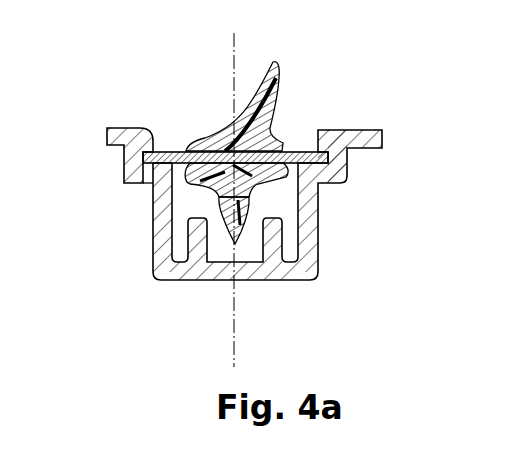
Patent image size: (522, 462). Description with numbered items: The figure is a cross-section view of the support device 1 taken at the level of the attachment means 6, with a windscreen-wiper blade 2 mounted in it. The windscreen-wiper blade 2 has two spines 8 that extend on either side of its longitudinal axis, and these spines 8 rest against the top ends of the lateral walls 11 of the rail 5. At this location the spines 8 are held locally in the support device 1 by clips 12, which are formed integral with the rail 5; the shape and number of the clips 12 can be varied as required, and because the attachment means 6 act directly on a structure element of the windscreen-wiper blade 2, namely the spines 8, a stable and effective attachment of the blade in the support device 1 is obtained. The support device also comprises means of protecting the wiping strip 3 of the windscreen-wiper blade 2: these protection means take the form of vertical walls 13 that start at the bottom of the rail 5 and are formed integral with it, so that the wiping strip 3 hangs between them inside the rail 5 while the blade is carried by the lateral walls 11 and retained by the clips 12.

The support device 1 is at (258, 214).
The windscreen-wiper blade 2 is at (288, 87).
The wiping strip 3 is at (228, 233).
The rail 5 is at (311, 272).
The attachment means 6 is at (365, 164).
The spines 8 is at (297, 146).
The lateral walls 11 is at (153, 227).
The clips 12 is at (152, 146).
The vertical walls 13 is at (252, 265).